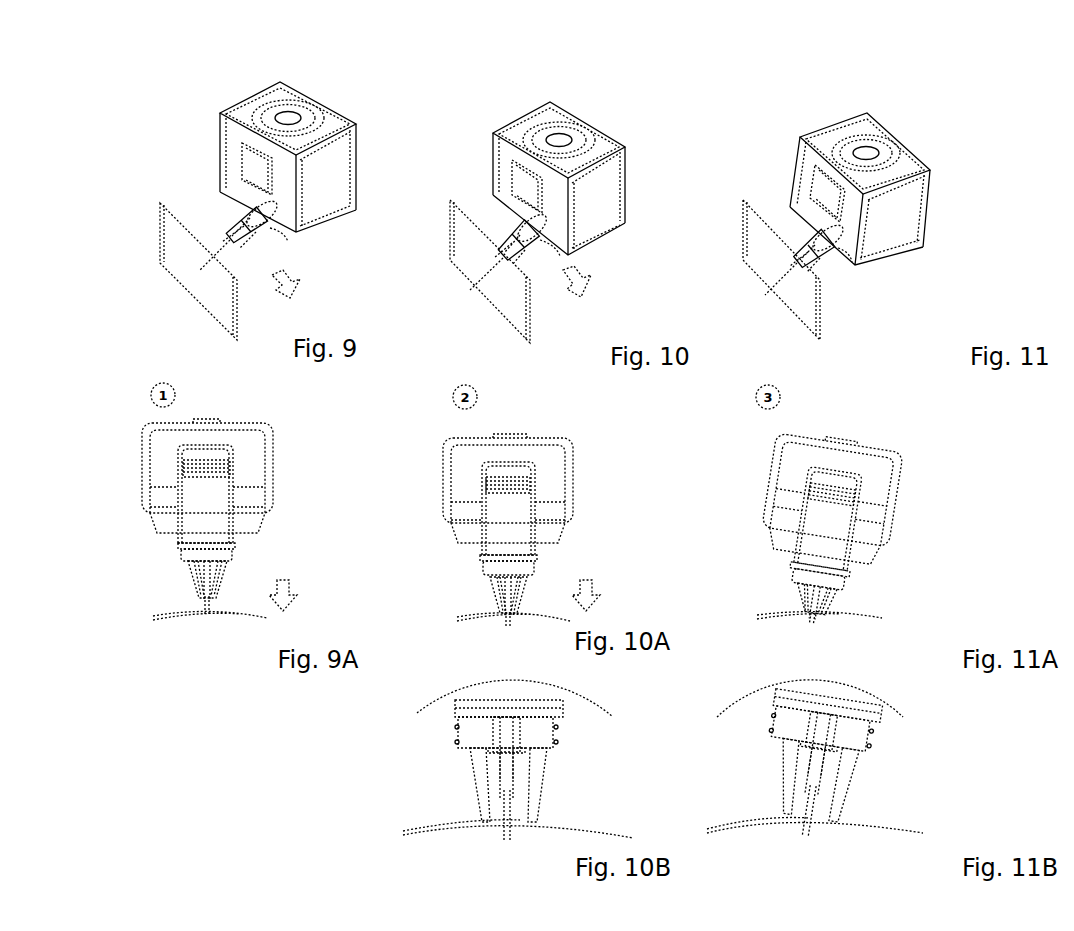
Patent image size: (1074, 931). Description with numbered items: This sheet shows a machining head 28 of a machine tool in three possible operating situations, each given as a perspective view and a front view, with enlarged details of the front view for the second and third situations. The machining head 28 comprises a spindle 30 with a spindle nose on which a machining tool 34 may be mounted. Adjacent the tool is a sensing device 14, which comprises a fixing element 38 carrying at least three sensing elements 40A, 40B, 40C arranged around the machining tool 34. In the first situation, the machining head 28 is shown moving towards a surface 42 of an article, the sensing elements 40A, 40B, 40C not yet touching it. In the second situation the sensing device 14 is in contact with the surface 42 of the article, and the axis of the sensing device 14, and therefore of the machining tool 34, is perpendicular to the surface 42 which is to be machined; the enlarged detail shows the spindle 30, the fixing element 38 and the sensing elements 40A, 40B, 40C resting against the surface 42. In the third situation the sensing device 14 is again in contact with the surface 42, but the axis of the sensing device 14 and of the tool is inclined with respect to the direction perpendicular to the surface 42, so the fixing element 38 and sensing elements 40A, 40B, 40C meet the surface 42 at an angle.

In FIG. 9A, the sensing device 14 is at (237, 570).
In FIG. 10A, the sensing device 14 is at (536, 585).
In FIG. 11A, the sensing device 14 is at (790, 583).
In FIG. 10B, the sensing device 14 is at (553, 767).
In FIG. 11B, the sensing device 14 is at (863, 772).
In FIG. 9, the machining head 28 is at (332, 88).
In FIG. 10, the machining head 28 is at (602, 112).
In FIG. 11, the machining head 28 is at (912, 128).
In FIG. 9A, the machining head 28 is at (285, 461).
In FIG. 10A, the machining head 28 is at (583, 478).
In FIG. 11A, the machining head 28 is at (903, 480).
In FIG. 9, the spindle 30 is at (282, 238).
In FIG. 10, the spindle 30 is at (560, 250).
In FIG. 11, the spindle 30 is at (842, 260).
In FIG. 9A, the spindle 30 is at (242, 551).
In FIG. 10A, the spindle 30 is at (545, 567).
In FIG. 11A, the spindle 30 is at (790, 557).
In FIG. 10B, the spindle 30 is at (572, 708).
In FIG. 11B, the spindle 30 is at (882, 728).
In FIG. 9, the machining tool 34 is at (233, 243).
In FIG. 10, the machining tool 34 is at (510, 257).
In FIG. 11, the machining tool 34 is at (787, 260).
In FIG. 9A, the machining tool 34 is at (208, 595).
In FIG. 10A, the machining tool 34 is at (507, 610).
In FIG. 11A, the machining tool 34 is at (813, 613).
In FIG. 10B, the machining tool 34 is at (520, 793).
In FIG. 11B, the machining tool 34 is at (818, 780).
In FIG. 9, the fixing element 38 is at (260, 220).
In FIG. 10, the fixing element 38 is at (532, 238).
In FIG. 11, the fixing element 38 is at (817, 227).
In FIG. 9A, the fixing element 38 is at (187, 545).
In FIG. 10A, the fixing element 38 is at (492, 570).
In FIG. 11A, the fixing element 38 is at (838, 579).
In FIG. 10B, the fixing element 38 is at (477, 740).
In FIG. 11B, the fixing element 38 is at (797, 728).
In FIG. 9, the sensing element 40A is at (237, 214).
In FIG. 10, the sensing element 40A is at (500, 233).
In FIG. 11, the sensing element 40A is at (787, 247).
In FIG. 9A, the sensing element 40A is at (203, 568).
In FIG. 10A, the sensing element 40A is at (507, 580).
In FIG. 11A, the sensing element 40A is at (810, 607).
In FIG. 10B, the sensing element 40A is at (503, 777).
In FIG. 11B, the sensing element 40A is at (813, 773).
In FIG. 9, the sensing element 40B is at (220, 237).
In FIG. 10, the sensing element 40B is at (490, 255).
In FIG. 11, the sensing element 40B is at (777, 250).
In FIG. 9A, the sensing element 40B is at (198, 592).
In FIG. 10A, the sensing element 40B is at (507, 602).
In FIG. 11A, the sensing element 40B is at (800, 597).
In FIG. 10B, the sensing element 40B is at (477, 777).
In FIG. 11B, the sensing element 40B is at (782, 765).
In FIG. 9, the sensing element 40C is at (240, 247).
In FIG. 10, the sensing element 40C is at (510, 267).
In FIG. 11, the sensing element 40C is at (790, 270).
In FIG. 9A, the sensing element 40C is at (229, 568).
In FIG. 10A, the sensing element 40C is at (523, 600).
In FIG. 11A, the sensing element 40C is at (823, 600).
In FIG. 10B, the sensing element 40C is at (540, 777).
In FIG. 11B, the sensing element 40C is at (843, 790).
In FIG. 9, the surface 42 is at (170, 237).
In FIG. 10, the surface 42 is at (465, 247).
In FIG. 11, the surface 42 is at (757, 263).
In FIG. 9A, the surface 42 is at (170, 613).
In FIG. 10A, the surface 42 is at (473, 617).
In FIG. 11A, the surface 42 is at (853, 617).
In FIG. 10B, the surface 42 is at (453, 827).
In FIG. 11B, the surface 42 is at (750, 827).